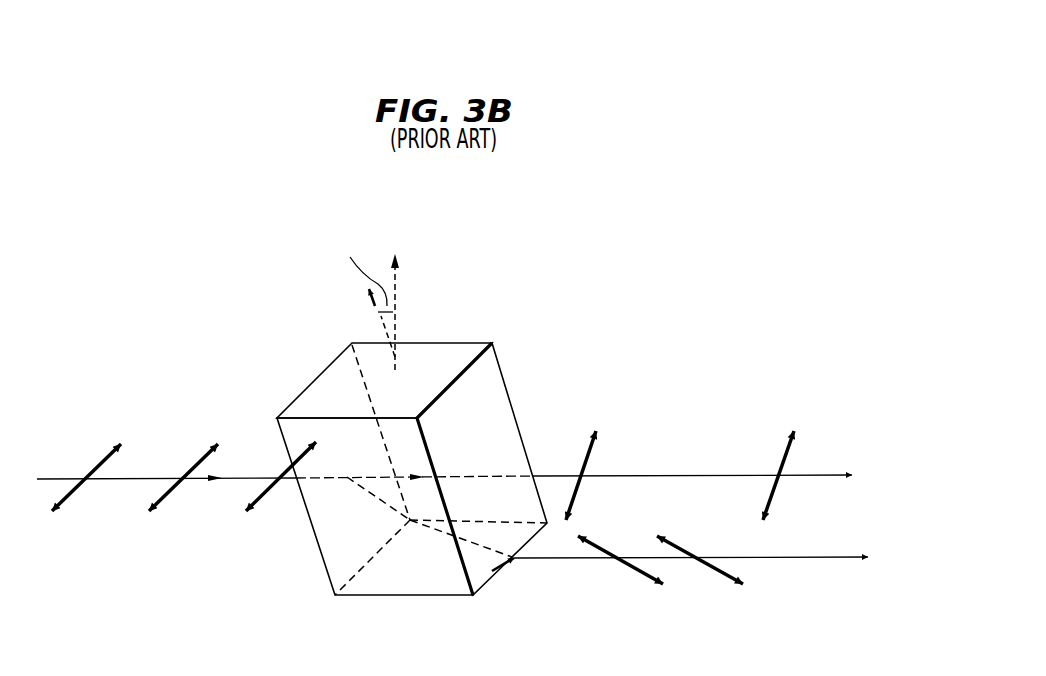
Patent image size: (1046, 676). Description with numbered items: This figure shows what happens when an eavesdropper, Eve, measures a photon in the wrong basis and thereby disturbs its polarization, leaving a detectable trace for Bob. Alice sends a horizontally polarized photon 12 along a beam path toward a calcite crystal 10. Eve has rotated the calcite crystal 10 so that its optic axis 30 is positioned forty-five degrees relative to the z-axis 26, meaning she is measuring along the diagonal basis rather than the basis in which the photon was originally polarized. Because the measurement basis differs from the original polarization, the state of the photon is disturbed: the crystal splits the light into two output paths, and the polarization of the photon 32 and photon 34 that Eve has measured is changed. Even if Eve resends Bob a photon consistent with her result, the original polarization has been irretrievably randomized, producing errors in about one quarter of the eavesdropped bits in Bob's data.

The calcite crystal 10 is at (507, 370).
The horizontally polarized photon 12 is at (105, 456).
The z-axis 26 is at (397, 281).
The optic axis 30 is at (381, 320).
The photon 32 is at (780, 463).
The photon 34 is at (687, 548).